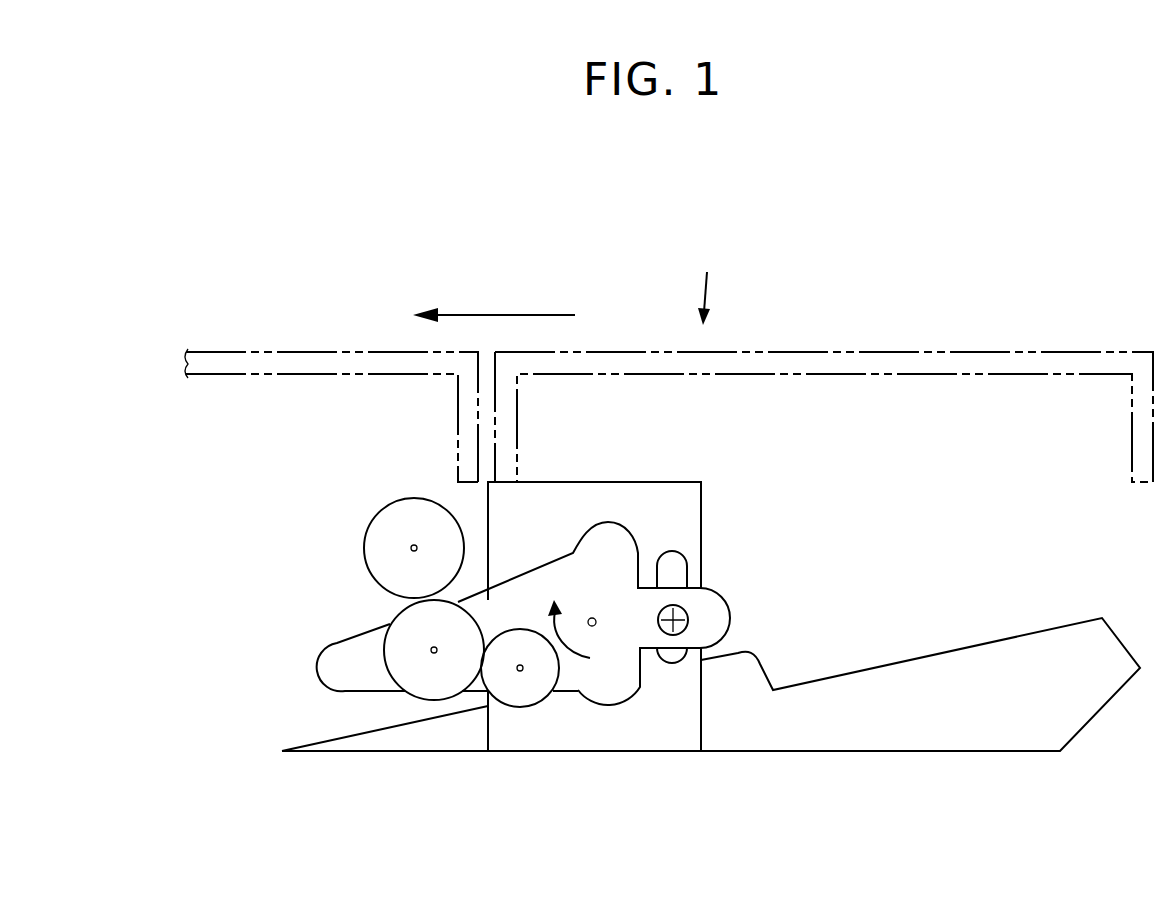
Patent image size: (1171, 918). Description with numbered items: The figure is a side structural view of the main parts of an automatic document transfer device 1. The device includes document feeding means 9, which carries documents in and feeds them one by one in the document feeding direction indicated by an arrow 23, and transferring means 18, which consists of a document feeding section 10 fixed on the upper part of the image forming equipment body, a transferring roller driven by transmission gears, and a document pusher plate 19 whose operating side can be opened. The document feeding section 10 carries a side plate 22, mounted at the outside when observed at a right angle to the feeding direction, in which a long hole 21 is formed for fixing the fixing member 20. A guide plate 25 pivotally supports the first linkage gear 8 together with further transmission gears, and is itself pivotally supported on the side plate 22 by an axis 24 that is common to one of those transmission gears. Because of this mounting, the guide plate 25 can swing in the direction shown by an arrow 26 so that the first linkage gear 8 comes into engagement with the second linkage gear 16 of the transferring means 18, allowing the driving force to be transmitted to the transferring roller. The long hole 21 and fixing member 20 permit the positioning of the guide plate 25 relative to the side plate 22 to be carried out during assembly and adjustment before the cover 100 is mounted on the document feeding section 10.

The automatic document transfer device 1 is at (706, 281).
The first linkage gear 8 is at (455, 680).
The document feeding means 9 is at (779, 498).
The document feeding section 10 is at (1016, 311).
The second linkage gear 16 is at (380, 546).
The transferring means 18 is at (373, 487).
The document pusher plate 19 is at (285, 378).
The fixing member 20 is at (687, 613).
The long hole 21 is at (676, 570).
The side plate 22 is at (667, 695).
The document feeding direction arrow 23 is at (505, 315).
The axis 24 is at (595, 626).
The guide plate 25 is at (607, 705).
The swing direction arrow 26 is at (573, 657).
The cover 100 is at (850, 362).